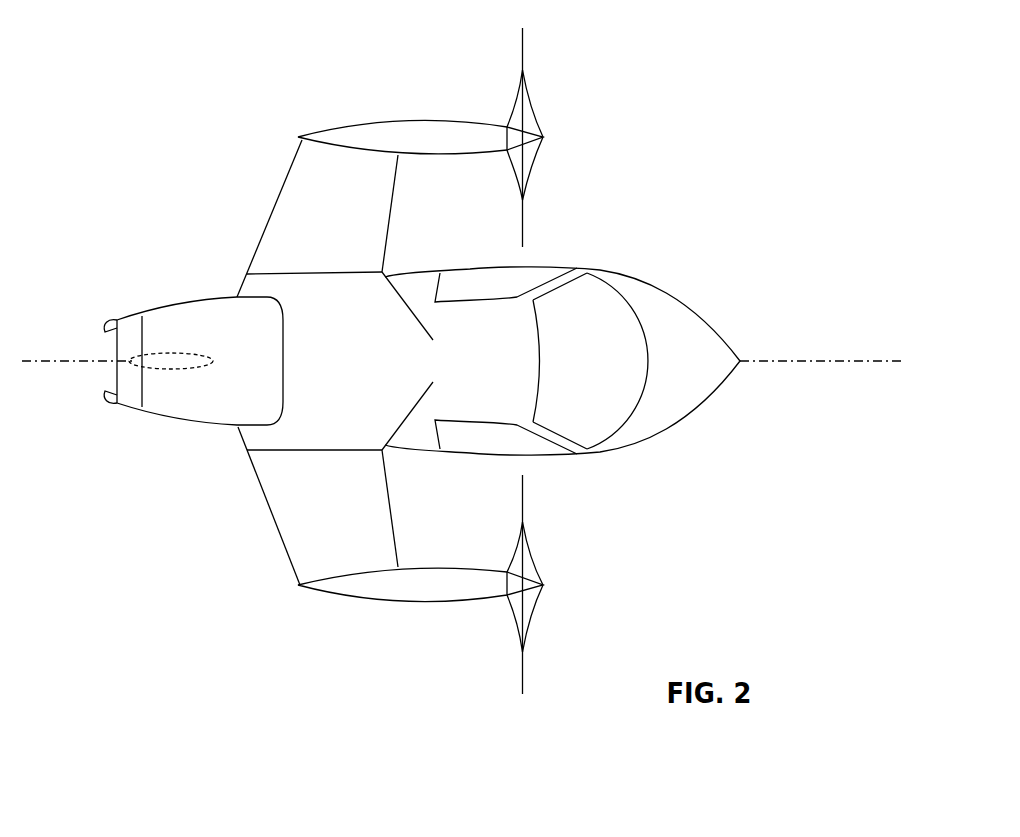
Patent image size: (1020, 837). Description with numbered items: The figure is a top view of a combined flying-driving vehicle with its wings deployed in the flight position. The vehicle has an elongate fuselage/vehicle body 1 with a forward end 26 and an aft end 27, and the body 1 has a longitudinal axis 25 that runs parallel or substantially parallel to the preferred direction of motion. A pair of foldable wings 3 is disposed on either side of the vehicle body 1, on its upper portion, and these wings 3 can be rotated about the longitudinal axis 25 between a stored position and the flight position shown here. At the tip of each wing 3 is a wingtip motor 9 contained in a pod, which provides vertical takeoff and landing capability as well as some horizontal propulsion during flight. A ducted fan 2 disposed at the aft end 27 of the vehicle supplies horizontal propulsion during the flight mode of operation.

The fuselage/vehicle body 1 is at (668, 307).
The ducted fan 2 is at (220, 313).
The foldable wings 3 is at (290, 510).
The wingtip motor 9 is at (410, 593).
The longitudinal axis 25 is at (855, 363).
The forward end 26 is at (742, 388).
The aft end 27 is at (122, 302).